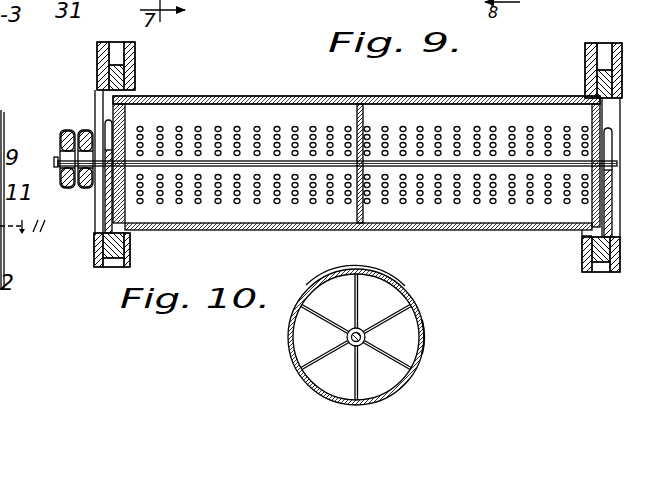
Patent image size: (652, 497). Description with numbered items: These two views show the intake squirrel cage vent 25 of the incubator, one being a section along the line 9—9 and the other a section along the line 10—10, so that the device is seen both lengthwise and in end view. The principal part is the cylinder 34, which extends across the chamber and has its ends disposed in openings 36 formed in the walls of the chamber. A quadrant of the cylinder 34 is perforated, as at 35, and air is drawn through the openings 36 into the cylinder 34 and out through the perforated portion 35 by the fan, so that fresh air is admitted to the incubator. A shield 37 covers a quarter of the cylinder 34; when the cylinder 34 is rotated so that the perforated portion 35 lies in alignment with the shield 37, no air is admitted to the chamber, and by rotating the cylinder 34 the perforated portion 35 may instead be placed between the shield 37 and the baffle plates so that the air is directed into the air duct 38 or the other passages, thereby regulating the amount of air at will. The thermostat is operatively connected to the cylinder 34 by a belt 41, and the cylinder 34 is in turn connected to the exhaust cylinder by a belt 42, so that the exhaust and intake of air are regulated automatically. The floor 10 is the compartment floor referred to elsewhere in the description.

In FIG. 9, the cylinder 34 is at (212, 105).
In FIG. 10, the cylinder 34 is at (288, 337).
In FIG. 9, the shield 37 is at (283, 100).
In FIG. 10, the shield 37 is at (386, 277).
In FIG. 9, the intake squirrel cage vent 25 is at (372, 97).
In FIG. 10, the intake squirrel cage vent 25 is at (311, 289).
In FIG. 9, the perforated portion 35 is at (458, 126).
In FIG. 10, the perforated portion 35 is at (426, 350).
In FIG. 9, the floor 10 is at (546, 85).
In FIG. 9, the openings 36 is at (104, 96).
In FIG. 9, the air duct 38 is at (612, 106).
In FIG. 9, the belt 41 is at (90, 130).
In FIG. 9, the belt 42 is at (64, 131).
In FIG. 10, the section line 9 is at (384, 254).